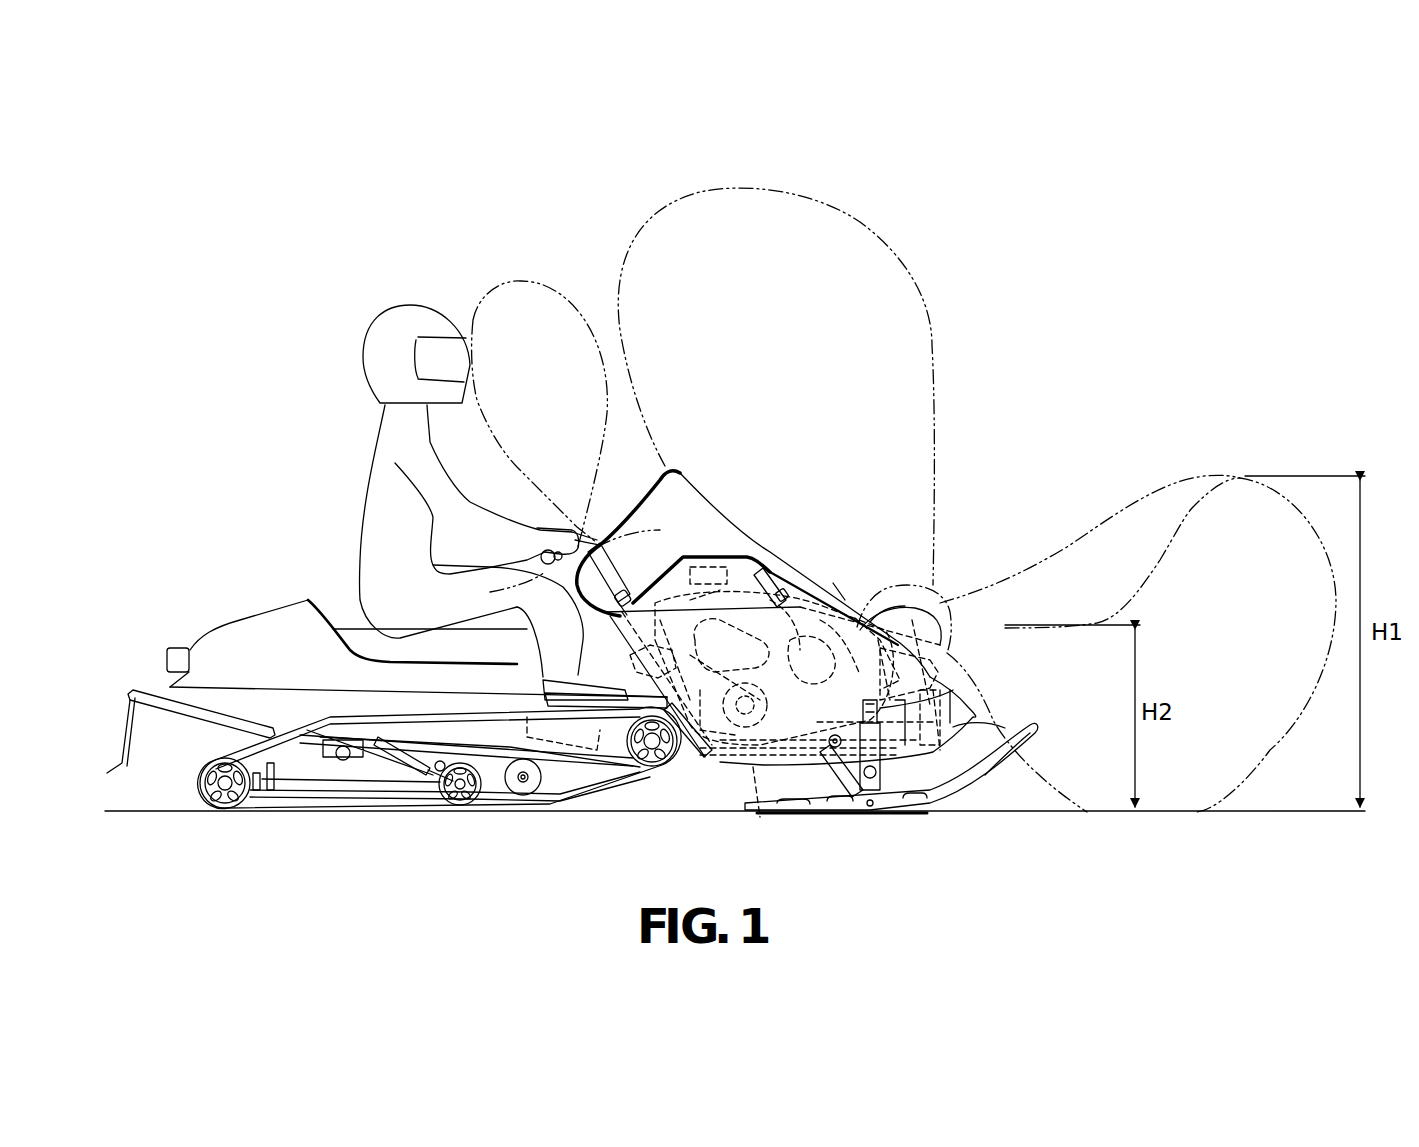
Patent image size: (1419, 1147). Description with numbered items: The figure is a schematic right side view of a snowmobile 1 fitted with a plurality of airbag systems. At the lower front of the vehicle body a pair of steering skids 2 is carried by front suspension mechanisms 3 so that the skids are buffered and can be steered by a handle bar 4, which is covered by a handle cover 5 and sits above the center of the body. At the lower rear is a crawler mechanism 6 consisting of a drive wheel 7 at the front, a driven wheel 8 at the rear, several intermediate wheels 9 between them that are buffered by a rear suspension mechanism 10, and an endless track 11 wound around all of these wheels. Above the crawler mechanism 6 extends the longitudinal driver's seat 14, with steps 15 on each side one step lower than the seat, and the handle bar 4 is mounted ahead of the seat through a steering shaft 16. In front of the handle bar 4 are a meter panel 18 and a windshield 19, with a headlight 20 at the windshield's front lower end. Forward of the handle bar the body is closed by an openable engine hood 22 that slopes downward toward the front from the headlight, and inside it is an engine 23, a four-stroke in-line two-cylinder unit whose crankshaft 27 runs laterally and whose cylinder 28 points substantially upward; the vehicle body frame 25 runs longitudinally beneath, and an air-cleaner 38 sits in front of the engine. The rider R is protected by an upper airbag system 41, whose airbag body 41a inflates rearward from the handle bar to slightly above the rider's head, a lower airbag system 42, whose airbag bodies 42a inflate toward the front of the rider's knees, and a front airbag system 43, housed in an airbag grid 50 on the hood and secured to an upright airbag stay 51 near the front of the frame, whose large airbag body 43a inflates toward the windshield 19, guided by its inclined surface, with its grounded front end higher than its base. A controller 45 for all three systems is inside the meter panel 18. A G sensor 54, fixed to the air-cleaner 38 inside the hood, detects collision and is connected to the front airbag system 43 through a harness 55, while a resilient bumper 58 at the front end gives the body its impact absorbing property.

The snowmobile 1 is at (260, 577).
The steering skid 2 is at (985, 780).
The front suspension mechanism 3 is at (835, 780).
The handle bar 4 is at (567, 528).
The handle cover 5 is at (620, 585).
The crawler mechanism 6 is at (439, 798).
The drive wheel 7 is at (655, 768).
The driven wheel 8 is at (227, 805).
The intermediate wheels 9 is at (520, 795).
The rear suspension mechanism 10 is at (418, 778).
The endless track 11 is at (588, 800).
The driver's seat 14 is at (347, 612).
The steps 15 is at (512, 688).
The steering shaft 16 is at (700, 635).
The meter panel 18 is at (655, 582).
The windshield 19 is at (667, 470).
The headlight 20 is at (792, 590).
The engine hood 22 is at (835, 586).
The engine 23 is at (805, 592).
The vehicle body frame 25 is at (880, 795).
The crankshaft 27 is at (755, 805).
The cylinder 28 is at (790, 596).
The air-cleaner 38 is at (925, 735).
The upper airbag system 41 is at (601, 545).
The airbag body 41a is at (523, 282).
The lower airbag system 42 is at (615, 580).
The airbag body 42a is at (494, 591).
The front airbag system 43 is at (935, 590).
The airbag body 43a is at (775, 190).
The controller 45 is at (712, 578).
The airbag grid 50 is at (886, 628).
The airbag stay 51 is at (848, 630).
The G sensor 54 is at (950, 692).
The harness 55 is at (946, 668).
The bumper 58 is at (955, 727).
The rider R is at (368, 444).